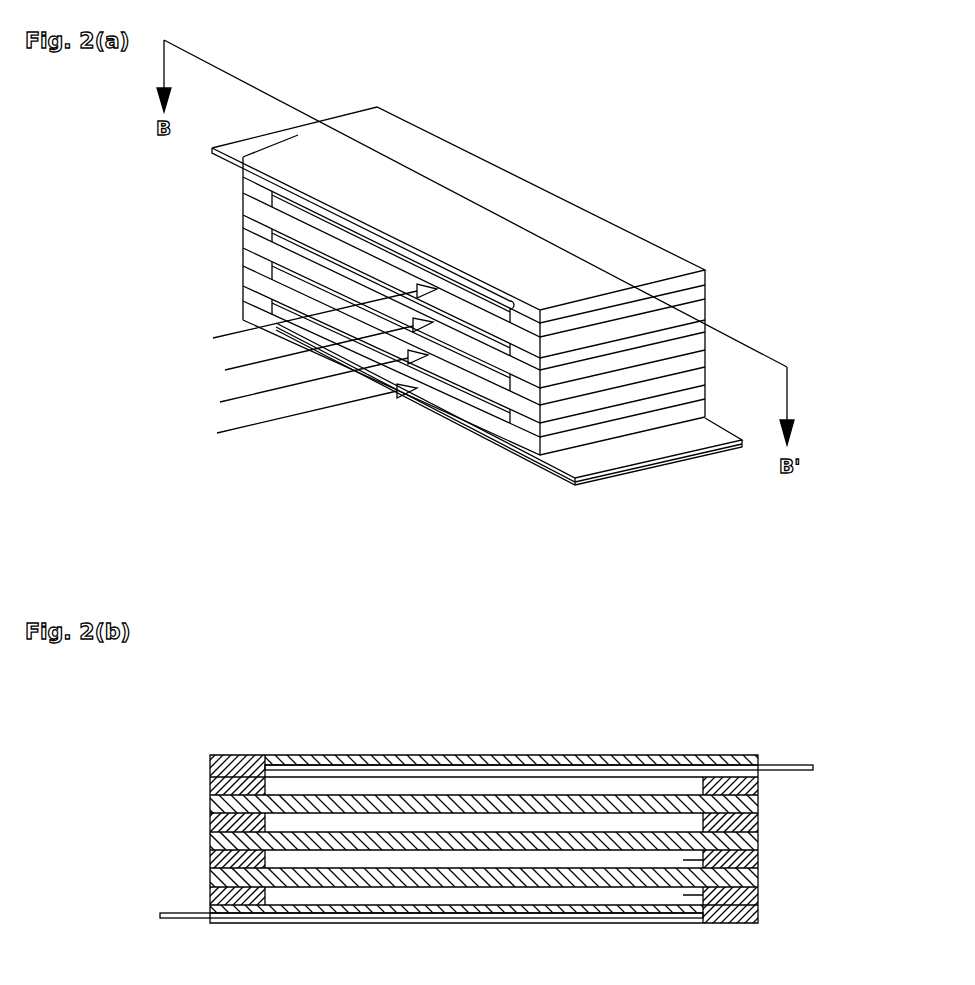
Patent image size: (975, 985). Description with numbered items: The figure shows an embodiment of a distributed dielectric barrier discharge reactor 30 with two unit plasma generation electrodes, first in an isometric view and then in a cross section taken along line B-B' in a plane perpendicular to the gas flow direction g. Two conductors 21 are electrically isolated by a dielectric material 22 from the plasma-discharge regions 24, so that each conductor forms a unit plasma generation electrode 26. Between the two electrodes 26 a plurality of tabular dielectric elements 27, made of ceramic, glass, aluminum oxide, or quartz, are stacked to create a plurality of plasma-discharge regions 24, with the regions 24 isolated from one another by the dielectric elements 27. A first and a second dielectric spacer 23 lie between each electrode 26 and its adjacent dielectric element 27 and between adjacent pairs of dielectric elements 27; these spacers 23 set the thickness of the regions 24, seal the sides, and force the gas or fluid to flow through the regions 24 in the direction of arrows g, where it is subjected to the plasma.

In FIG. 2A, the conductor 21 is at (285, 137).
In FIG. 2B, the conductor 21 is at (792, 758).
In FIG. 2A, the dielectric material 22 is at (247, 305).
In FIG. 2B, the dielectric material 22 is at (228, 765).
In FIG. 2A, the dielectric spacer 23 is at (255, 292).
In FIG. 2B, the dielectric spacer 23 is at (758, 852).
In FIG. 2B, the plasma-discharge region 24 is at (683, 895).
In FIG. 2B, the unit plasma generation electrode 26 is at (375, 760).
In FIG. 2A, the dielectric element 27 is at (262, 192).
In FIG. 2B, the dielectric element 27 is at (227, 873).
In FIG. 2A, the distributed dielectric barrier discharge reactor 30 is at (552, 100).
In FIG. 2B, the distributed dielectric barrier discharge reactor 30 is at (606, 676).
In FIG. 2A, the gas flow direction arrows g is at (217, 433).